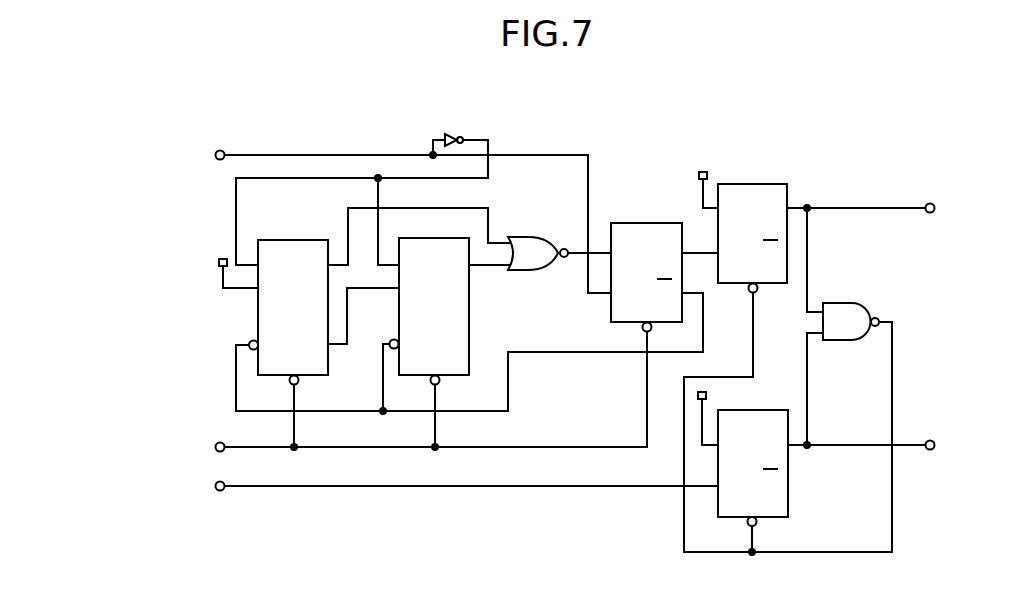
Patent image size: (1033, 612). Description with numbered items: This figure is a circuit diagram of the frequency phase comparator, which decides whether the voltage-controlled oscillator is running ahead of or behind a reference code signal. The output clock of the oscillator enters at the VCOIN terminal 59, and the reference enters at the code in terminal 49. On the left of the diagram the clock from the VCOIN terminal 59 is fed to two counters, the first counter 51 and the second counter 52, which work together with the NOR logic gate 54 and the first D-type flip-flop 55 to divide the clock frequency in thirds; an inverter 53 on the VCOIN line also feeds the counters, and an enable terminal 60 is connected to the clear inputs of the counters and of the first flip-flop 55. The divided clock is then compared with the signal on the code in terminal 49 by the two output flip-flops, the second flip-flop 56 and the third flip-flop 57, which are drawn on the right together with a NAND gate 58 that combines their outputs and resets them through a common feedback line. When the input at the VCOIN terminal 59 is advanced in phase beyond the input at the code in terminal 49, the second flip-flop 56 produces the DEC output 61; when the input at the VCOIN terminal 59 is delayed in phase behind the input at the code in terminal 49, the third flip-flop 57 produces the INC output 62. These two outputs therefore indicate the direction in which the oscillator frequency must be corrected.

The code in terminal 49 is at (138, 488).
The counter CT1 51 is at (264, 220).
The counter CT2 52 is at (472, 343).
The inverter NAI 53 is at (480, 132).
The logic gate NR4 54 is at (548, 213).
The flip-flop FF5 55 is at (628, 189).
The flip-flop FF6 56 is at (743, 145).
The flip-flop FF7 57 is at (789, 501).
The NAND gate NA2 58 is at (868, 304).
The VCOIN terminal 59 is at (157, 139).
The enable terminal 60 is at (138, 448).
The DEC output 61 is at (965, 190).
The INC output 62 is at (946, 428).